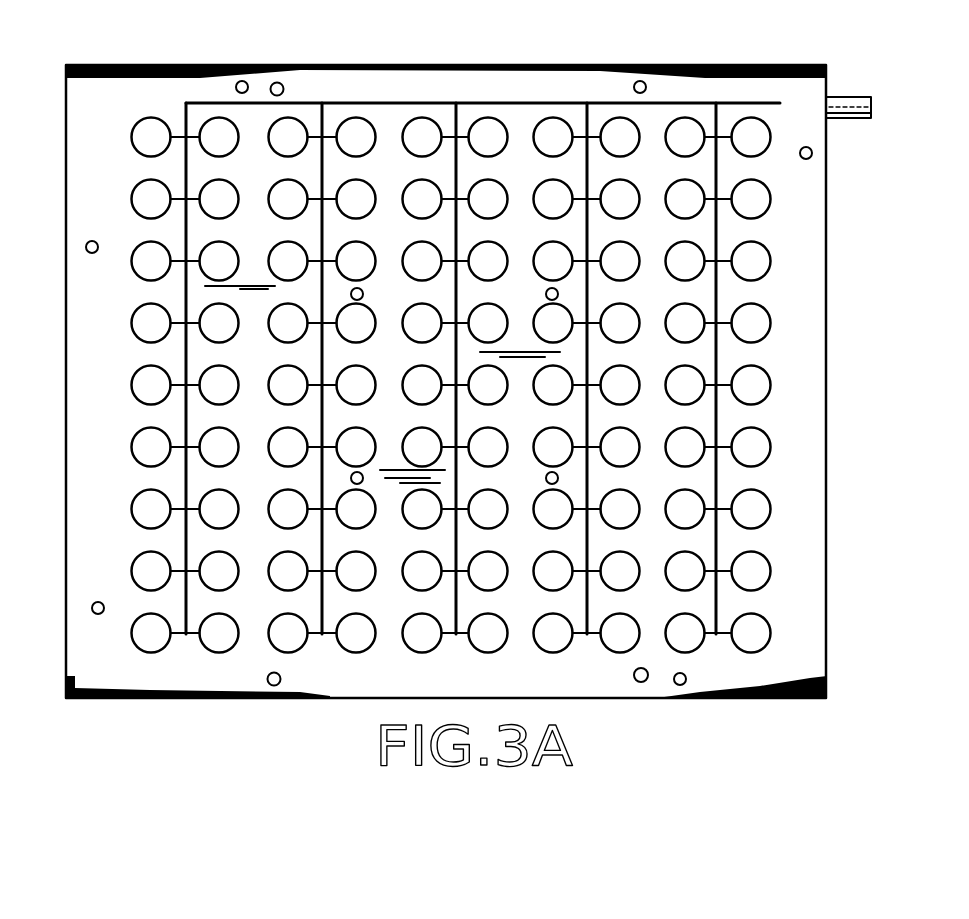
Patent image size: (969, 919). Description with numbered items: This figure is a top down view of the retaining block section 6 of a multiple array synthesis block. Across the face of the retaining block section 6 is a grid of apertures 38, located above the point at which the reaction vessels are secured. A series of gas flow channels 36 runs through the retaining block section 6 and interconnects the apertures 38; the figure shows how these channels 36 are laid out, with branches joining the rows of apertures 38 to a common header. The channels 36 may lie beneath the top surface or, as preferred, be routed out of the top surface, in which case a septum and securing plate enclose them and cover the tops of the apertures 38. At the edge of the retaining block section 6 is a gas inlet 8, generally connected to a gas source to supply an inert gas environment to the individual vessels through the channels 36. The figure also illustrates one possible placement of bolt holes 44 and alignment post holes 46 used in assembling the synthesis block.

The retaining block section 6 is at (808, 337).
The gas inlet 8 is at (867, 118).
The gas flow channels 36 is at (718, 122).
The apertures 38 is at (145, 452).
The bolt holes 44 is at (643, 80).
The alignment post holes 46 is at (280, 82).